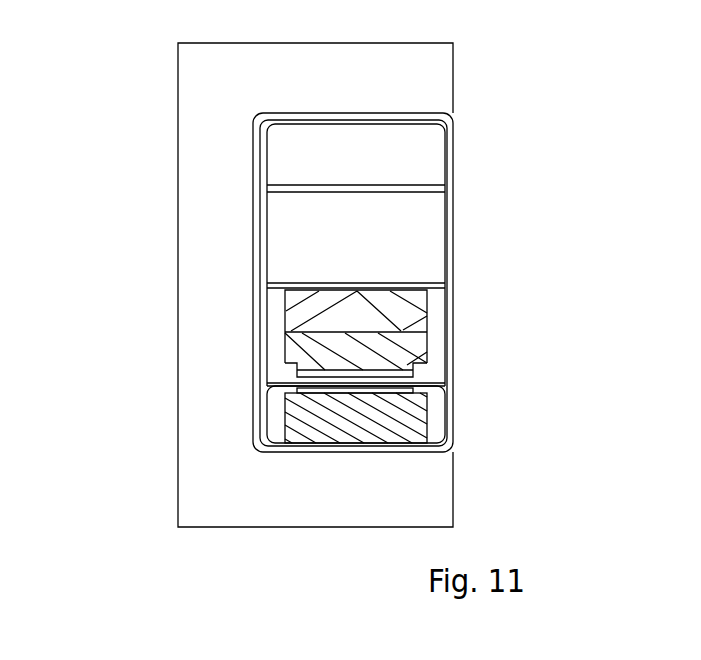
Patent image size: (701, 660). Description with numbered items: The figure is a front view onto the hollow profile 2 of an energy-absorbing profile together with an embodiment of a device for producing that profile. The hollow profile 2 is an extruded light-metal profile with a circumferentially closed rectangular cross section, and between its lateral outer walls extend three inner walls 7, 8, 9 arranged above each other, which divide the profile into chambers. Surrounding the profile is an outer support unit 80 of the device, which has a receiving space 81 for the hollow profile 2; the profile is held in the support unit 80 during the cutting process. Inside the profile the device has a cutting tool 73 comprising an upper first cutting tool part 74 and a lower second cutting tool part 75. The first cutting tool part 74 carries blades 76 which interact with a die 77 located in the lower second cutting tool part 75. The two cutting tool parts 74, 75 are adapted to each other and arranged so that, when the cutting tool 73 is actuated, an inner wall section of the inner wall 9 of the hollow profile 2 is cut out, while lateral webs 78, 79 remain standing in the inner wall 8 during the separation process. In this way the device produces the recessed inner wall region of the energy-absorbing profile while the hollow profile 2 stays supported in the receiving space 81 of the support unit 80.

The outer support unit 80 is at (196, 141).
The receiving space 81 is at (252, 225).
The hollow profile 2 is at (462, 149).
The inner wall 7 is at (437, 193).
The inner wall 8 is at (433, 283).
The cutting tool 73 is at (443, 302).
The first cutting tool part 74 is at (418, 342).
The blades 76 is at (290, 372).
The lateral web 78 is at (270, 388).
The lateral web 79 is at (438, 386).
The second cutting tool part 75 is at (423, 418).
The inner wall 9 is at (322, 388).
The die 77 is at (358, 395).